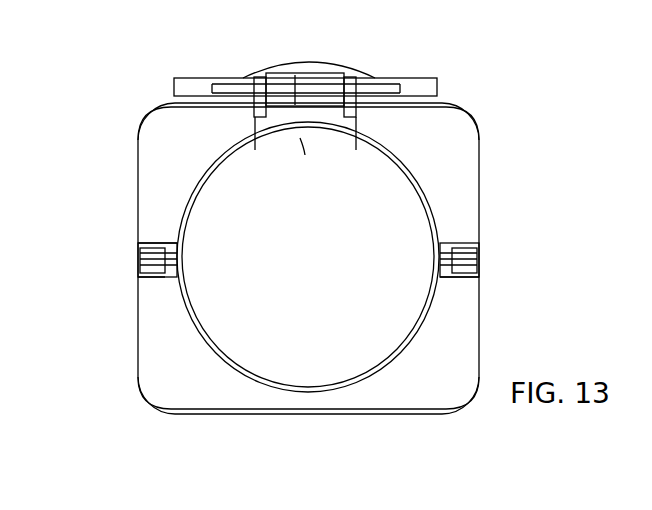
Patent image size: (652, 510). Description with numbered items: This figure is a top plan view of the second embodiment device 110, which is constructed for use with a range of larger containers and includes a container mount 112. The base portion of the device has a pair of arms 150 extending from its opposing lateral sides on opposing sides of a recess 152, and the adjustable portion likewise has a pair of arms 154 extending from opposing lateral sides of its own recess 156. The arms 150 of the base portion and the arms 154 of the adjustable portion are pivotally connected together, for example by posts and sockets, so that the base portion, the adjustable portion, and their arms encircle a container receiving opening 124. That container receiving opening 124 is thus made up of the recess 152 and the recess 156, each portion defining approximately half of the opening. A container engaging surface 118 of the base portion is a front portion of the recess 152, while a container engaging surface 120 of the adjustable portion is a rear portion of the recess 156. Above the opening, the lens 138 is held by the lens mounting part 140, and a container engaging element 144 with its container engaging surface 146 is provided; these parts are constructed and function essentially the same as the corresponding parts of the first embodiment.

The second embodiment device 110 is at (497, 93).
The container mount 112 is at (115, 158).
The container engaging surface 118 is at (247, 157).
The container engaging surface 120 is at (310, 389).
The container receiving opening 124 is at (432, 184).
The lens 138 is at (265, 68).
The lens mounting part 140 is at (330, 82).
The container engaging element 144 is at (360, 150).
The container engaging surface 146 is at (305, 140).
The arms 150 is at (153, 225).
The recess 152 is at (340, 222).
The arms 154 is at (155, 314).
The recess 156 is at (283, 302).